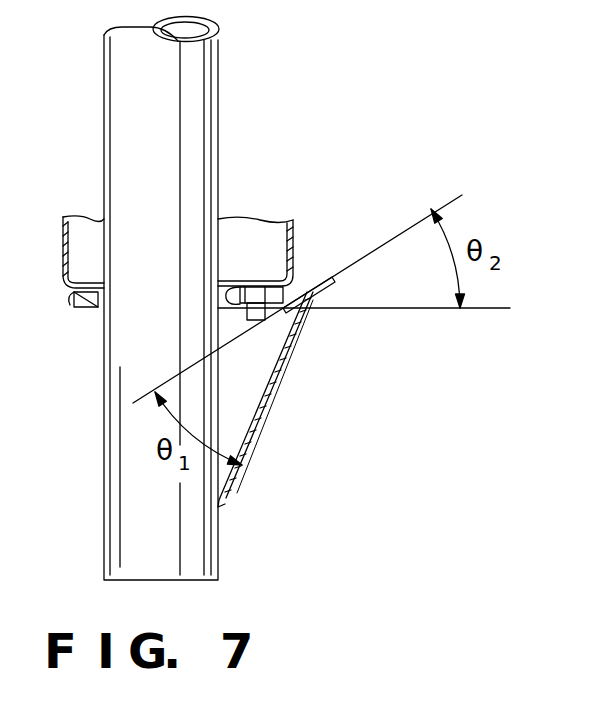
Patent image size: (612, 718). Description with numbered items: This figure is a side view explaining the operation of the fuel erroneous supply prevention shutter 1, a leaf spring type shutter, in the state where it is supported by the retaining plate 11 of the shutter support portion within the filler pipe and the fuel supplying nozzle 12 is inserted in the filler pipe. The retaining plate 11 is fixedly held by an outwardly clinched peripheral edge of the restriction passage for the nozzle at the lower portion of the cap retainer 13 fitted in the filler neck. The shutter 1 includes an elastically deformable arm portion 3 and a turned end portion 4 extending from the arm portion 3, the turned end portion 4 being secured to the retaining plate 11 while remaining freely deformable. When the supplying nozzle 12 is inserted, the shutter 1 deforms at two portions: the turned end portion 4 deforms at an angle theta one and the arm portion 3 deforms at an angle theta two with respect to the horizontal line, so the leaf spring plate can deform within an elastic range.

The fuel erroneous supply prevention shutter 1 is at (291, 391).
The arm portion 3 is at (332, 427).
The turned end portion 4 is at (322, 280).
The retaining plate 11 is at (80, 309).
The fuel supplying nozzle 12 is at (107, 440).
The cap retainer 13 is at (265, 231).